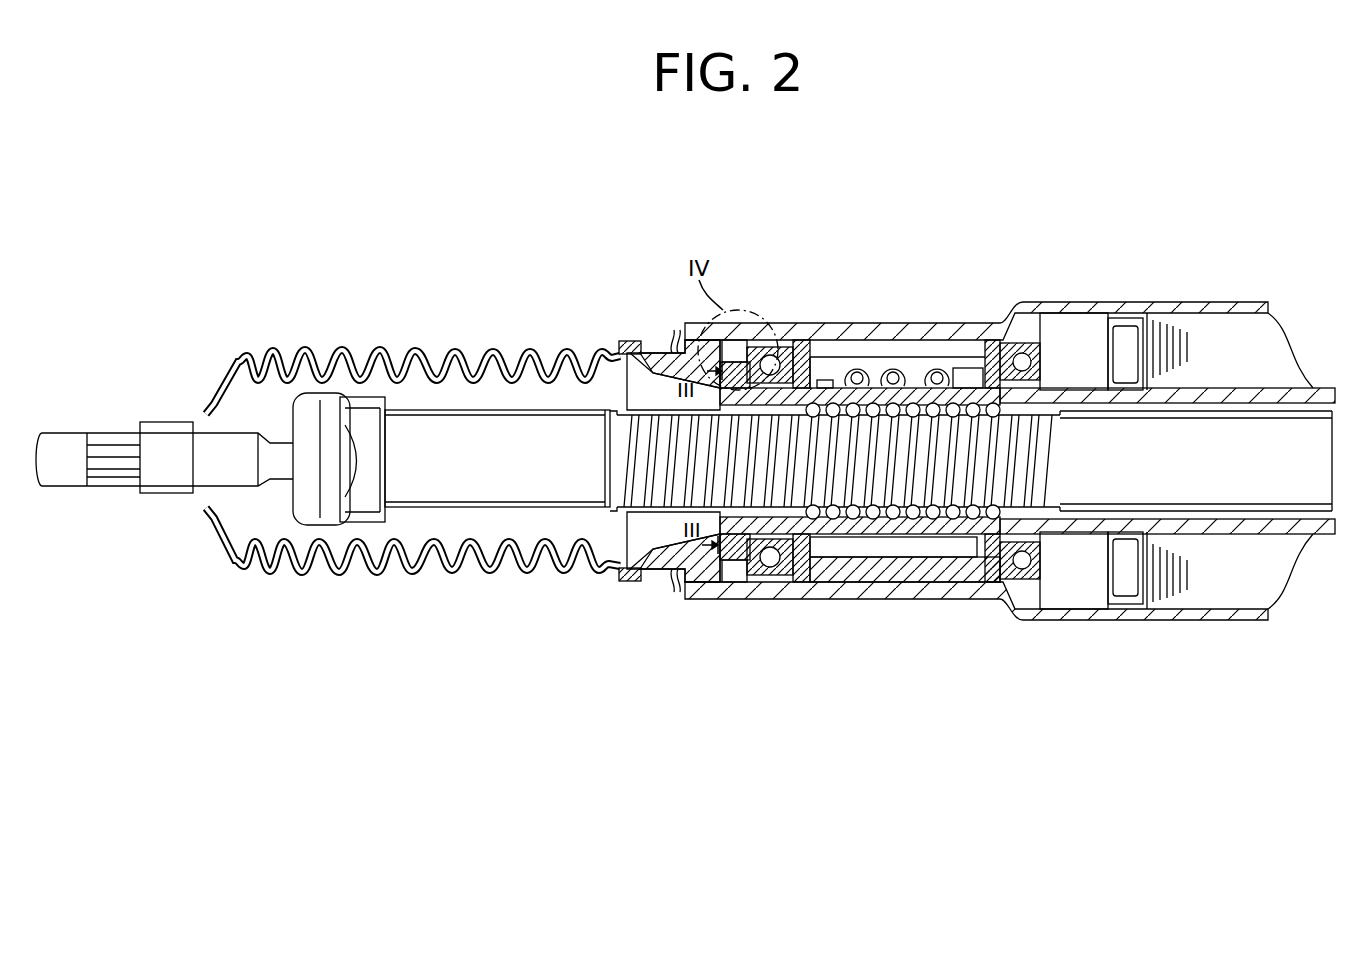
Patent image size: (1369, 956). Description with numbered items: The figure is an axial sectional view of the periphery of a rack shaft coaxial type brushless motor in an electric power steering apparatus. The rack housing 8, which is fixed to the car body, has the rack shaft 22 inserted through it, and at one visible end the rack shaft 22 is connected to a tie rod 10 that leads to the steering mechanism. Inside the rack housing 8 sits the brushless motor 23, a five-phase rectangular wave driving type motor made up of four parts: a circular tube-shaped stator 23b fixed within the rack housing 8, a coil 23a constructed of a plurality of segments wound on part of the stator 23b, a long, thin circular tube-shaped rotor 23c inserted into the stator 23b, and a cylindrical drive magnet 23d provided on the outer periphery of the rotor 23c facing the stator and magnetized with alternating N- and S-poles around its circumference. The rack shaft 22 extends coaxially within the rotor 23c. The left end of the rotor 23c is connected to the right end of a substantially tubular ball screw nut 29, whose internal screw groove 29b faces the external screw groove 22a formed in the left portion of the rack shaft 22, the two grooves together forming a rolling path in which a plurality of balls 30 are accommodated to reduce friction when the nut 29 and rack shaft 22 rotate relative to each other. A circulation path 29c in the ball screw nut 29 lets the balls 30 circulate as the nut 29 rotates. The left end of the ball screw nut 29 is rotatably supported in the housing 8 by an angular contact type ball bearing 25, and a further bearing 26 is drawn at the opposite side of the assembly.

The rack housing 8 is at (1183, 302).
The tie rod 10 is at (66, 433).
The rack shaft 22 is at (466, 480).
The external screw groove 22a is at (832, 478).
The brushless motor 23 is at (1078, 330).
The coil 23a is at (1127, 340).
The stator 23b is at (1233, 332).
The rotor 23c is at (1272, 402).
The drive magnet 23d is at (1283, 534).
The angular contact type ball bearing 25 is at (787, 345).
The bearing 26 is at (1045, 330).
The ball screw nut 29 is at (922, 520).
The internal screw groove 29b is at (930, 522).
The circulation path 29c is at (859, 372).
The balls 30 is at (862, 520).